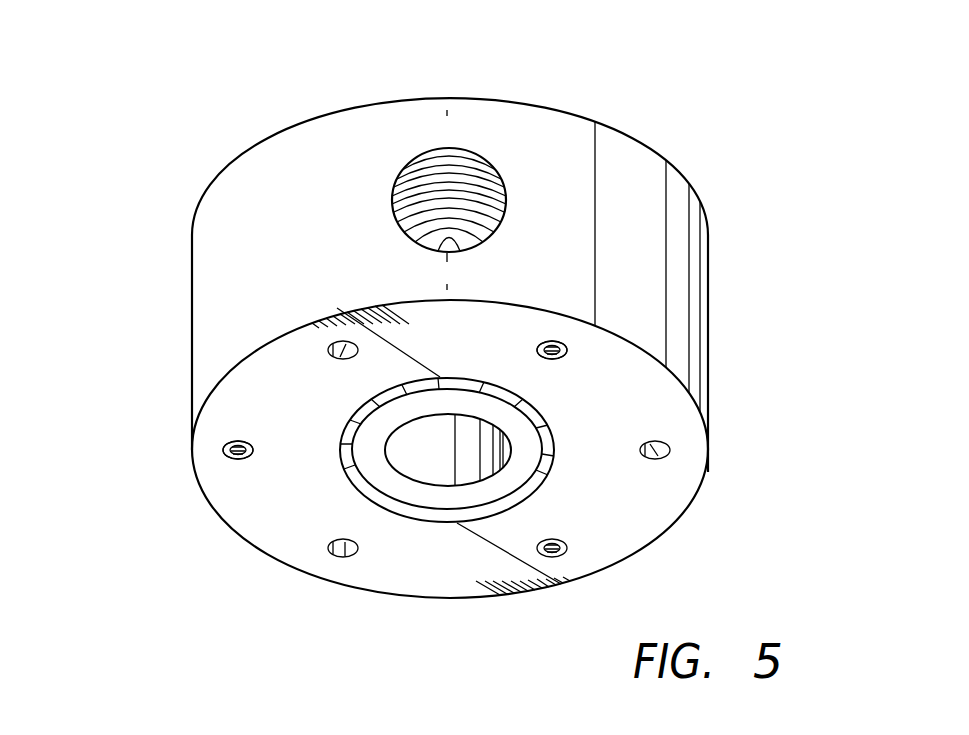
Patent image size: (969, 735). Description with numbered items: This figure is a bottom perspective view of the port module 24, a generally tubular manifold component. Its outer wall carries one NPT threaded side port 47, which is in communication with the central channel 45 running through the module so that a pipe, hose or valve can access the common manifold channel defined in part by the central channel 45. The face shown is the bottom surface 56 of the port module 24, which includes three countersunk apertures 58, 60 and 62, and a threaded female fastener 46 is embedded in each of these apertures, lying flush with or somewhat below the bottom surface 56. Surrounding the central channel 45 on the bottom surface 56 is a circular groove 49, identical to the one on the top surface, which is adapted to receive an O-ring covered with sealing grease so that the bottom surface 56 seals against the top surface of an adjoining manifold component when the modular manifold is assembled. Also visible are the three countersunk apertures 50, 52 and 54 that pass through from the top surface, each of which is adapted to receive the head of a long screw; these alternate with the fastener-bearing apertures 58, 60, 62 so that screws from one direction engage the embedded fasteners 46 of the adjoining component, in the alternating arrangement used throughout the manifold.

The port module 24 is at (747, 268).
The central channel 45 is at (422, 448).
The threaded female fastener 46 is at (552, 348).
The NPT threaded side port 47 is at (445, 178).
The circular groove 49 is at (422, 513).
The countersunk aperture 50 is at (665, 454).
The countersunk aperture 52 is at (338, 357).
The countersunk aperture 54 is at (345, 557).
The bottom surface 56 is at (652, 514).
The countersunk aperture 58 is at (556, 538).
The countersunk aperture 60 is at (556, 360).
The countersunk aperture 62 is at (236, 446).